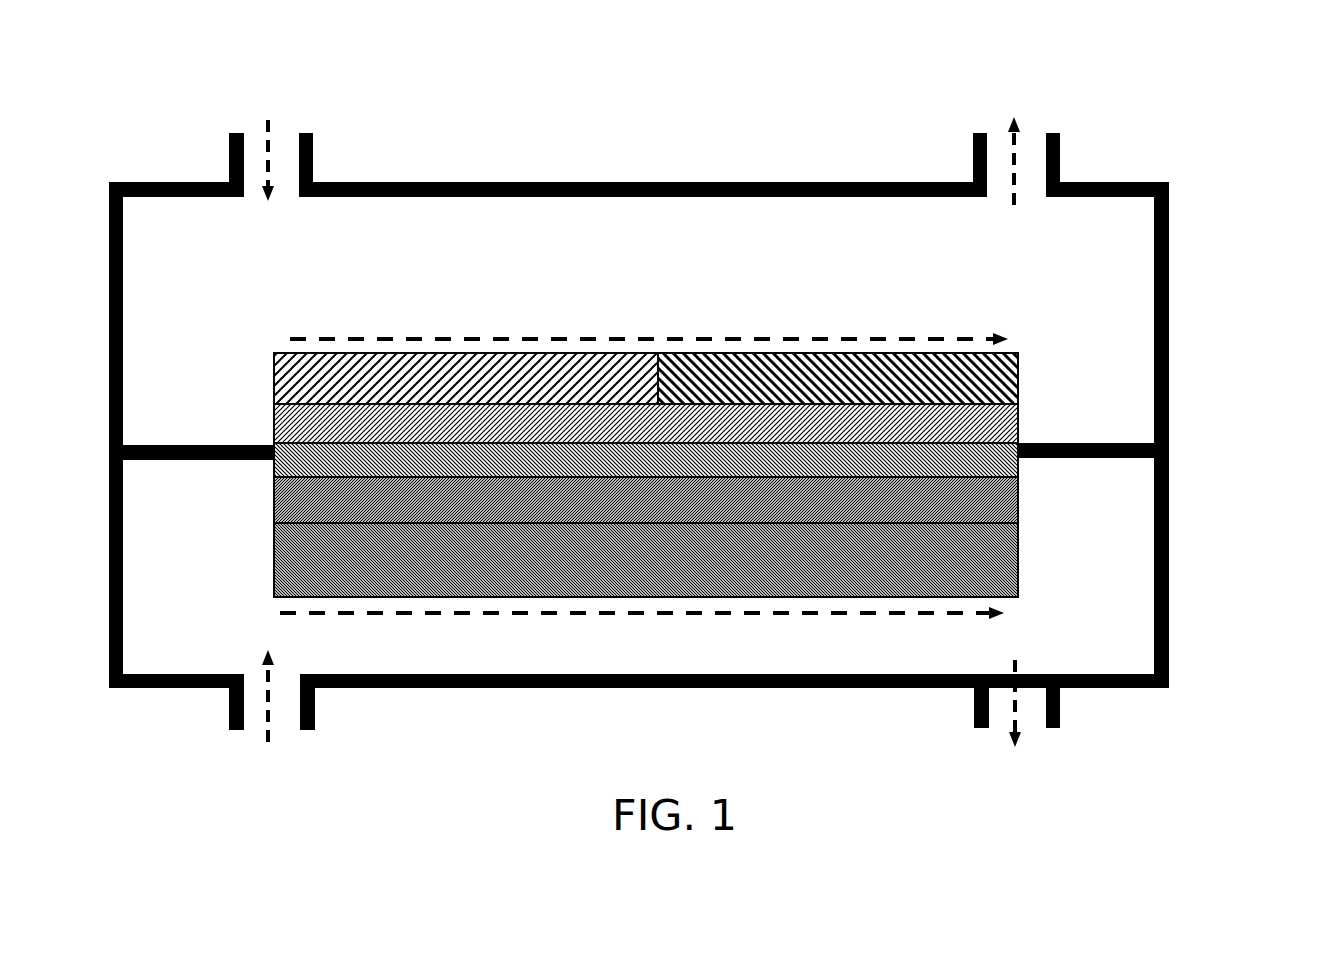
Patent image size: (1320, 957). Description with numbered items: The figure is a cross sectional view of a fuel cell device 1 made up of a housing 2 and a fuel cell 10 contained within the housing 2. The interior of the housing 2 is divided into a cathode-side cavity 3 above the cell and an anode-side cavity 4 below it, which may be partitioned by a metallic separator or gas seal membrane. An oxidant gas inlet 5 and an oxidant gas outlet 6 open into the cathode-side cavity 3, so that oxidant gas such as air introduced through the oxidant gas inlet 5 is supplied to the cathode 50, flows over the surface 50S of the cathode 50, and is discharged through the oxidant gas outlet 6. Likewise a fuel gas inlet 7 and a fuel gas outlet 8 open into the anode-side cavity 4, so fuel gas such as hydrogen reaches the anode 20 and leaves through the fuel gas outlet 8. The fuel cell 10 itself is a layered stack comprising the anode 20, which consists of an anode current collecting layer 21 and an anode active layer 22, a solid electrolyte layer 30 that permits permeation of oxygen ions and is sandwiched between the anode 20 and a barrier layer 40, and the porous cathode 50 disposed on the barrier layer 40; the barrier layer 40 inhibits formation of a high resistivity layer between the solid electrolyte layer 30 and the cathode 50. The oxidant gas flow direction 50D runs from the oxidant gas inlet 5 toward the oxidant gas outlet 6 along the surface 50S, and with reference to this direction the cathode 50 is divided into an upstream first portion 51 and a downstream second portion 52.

The fuel cell device 1 is at (1196, 141).
The housing 2 is at (1169, 236).
The cathode-side cavity 3 is at (669, 232).
The anode-side cavity 4 is at (675, 661).
The oxidant gas inlet 5 is at (313, 145).
The oxidant gas outlet 6 is at (1060, 150).
The fuel gas inlet 7 is at (315, 706).
The fuel gas outlet 8 is at (1060, 706).
The fuel cell 10 is at (220, 401).
The anode 20 is at (1243, 495).
The anode current collecting layer 21 is at (1018, 560).
The anode active layer 22 is at (1018, 510).
The solid electrolyte layer 30 is at (1018, 464).
The barrier layer 40 is at (1018, 420).
The cathode 50 is at (1018, 378).
The oxidant gas flow direction 50D is at (666, 312).
The surface of the cathode 50S is at (955, 355).
The first portion 51 is at (425, 352).
The second portion 52 is at (848, 352).